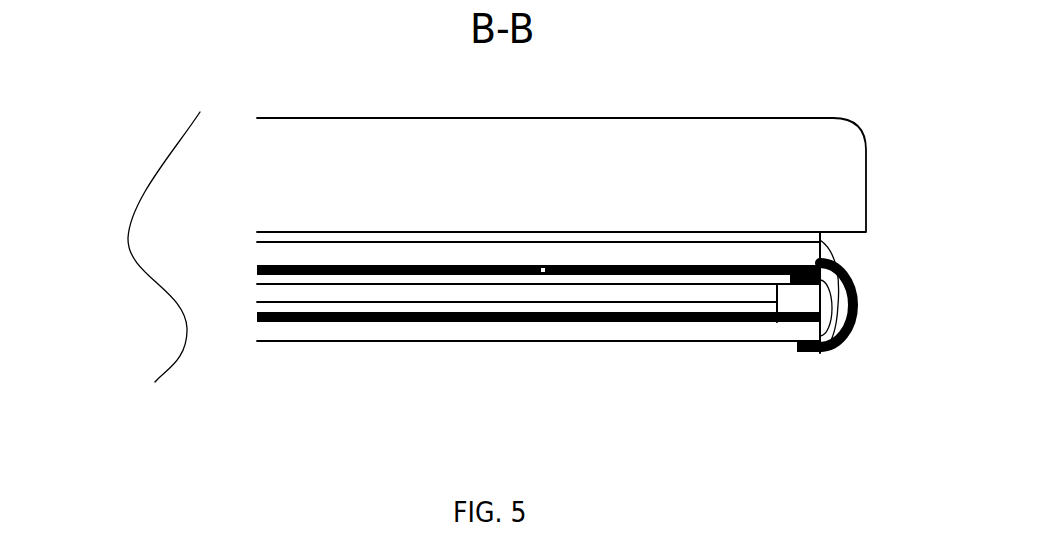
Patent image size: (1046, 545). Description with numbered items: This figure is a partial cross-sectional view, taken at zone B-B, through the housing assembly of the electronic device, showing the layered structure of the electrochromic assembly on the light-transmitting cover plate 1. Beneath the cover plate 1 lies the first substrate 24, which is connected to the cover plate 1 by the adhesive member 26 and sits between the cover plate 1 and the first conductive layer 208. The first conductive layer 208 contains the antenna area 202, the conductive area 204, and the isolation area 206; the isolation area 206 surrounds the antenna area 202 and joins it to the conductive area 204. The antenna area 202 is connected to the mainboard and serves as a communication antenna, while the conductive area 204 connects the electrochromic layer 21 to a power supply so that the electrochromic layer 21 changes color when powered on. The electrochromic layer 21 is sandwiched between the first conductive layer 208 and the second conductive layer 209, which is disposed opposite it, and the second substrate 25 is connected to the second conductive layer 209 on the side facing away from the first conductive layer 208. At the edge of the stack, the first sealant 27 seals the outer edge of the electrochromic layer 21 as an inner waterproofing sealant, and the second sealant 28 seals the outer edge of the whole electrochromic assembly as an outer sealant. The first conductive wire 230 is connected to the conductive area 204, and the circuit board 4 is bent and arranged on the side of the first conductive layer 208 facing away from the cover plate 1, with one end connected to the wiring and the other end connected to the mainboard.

The light-transmitting cover plate 1 is at (825, 166).
The first substrate 24 is at (277, 256).
The first conductive layer 208 is at (257, 265).
The conductive area 204 is at (403, 265).
The isolation area 206 is at (540, 267).
The antenna area 202 is at (692, 265).
The electrochromic layer 21 is at (272, 290).
The second conductive layer 209 is at (257, 316).
The second substrate 25 is at (290, 340).
The adhesive member 26 is at (775, 235).
The second sealant 28 is at (823, 260).
The circuit board 4 is at (850, 323).
The first sealant 27 is at (805, 300).
The first conductive wire 230 is at (788, 312).